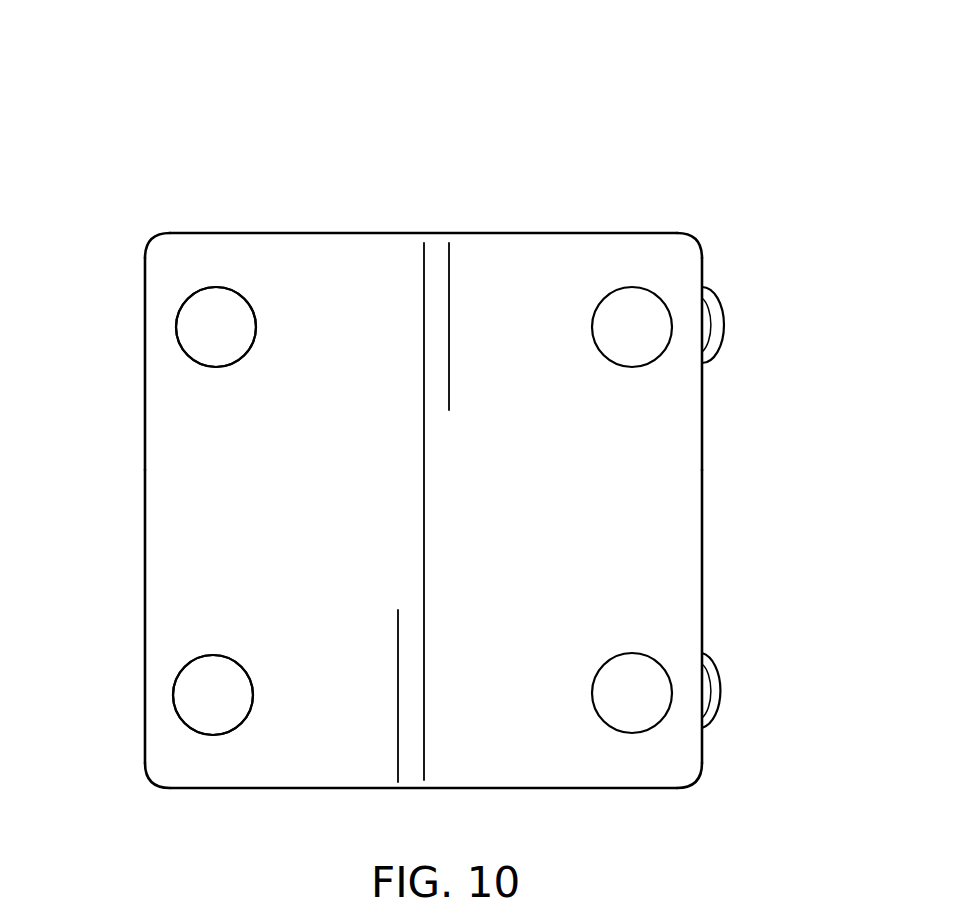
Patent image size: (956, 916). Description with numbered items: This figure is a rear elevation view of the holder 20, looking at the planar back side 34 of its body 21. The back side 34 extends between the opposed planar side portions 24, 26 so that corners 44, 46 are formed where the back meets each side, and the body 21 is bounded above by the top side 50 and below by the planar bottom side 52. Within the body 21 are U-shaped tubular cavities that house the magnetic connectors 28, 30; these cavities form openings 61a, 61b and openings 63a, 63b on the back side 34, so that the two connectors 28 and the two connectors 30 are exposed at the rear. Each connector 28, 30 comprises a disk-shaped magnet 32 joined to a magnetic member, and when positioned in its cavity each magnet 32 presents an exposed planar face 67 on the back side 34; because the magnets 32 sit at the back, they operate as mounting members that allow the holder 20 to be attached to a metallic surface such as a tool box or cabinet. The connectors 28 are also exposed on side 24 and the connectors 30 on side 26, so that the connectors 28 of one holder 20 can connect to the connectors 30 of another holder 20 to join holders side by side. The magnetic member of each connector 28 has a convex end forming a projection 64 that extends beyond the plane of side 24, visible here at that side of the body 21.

The holder 20 is at (261, 80).
The body 21 is at (418, 518).
The side 24 is at (703, 480).
The side 26 is at (145, 572).
The magnetic connector 28 is at (240, 358).
The magnetic connector 30 is at (714, 294).
The magnet 32 is at (422, 525).
The back side 34 is at (510, 524).
The corner 44 is at (703, 409).
The corner 46 is at (145, 376).
The top side 50 is at (398, 233).
The bottom side 52 is at (296, 788).
The opening 61a is at (606, 360).
The opening 61b is at (604, 670).
The opening 63a is at (200, 368).
The opening 63b is at (255, 697).
The projection 64 is at (722, 322).
The exposed planar face 67 is at (230, 340).